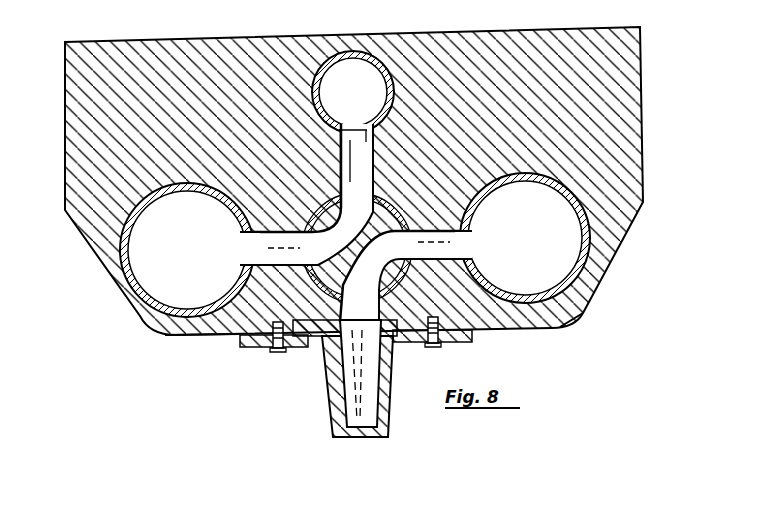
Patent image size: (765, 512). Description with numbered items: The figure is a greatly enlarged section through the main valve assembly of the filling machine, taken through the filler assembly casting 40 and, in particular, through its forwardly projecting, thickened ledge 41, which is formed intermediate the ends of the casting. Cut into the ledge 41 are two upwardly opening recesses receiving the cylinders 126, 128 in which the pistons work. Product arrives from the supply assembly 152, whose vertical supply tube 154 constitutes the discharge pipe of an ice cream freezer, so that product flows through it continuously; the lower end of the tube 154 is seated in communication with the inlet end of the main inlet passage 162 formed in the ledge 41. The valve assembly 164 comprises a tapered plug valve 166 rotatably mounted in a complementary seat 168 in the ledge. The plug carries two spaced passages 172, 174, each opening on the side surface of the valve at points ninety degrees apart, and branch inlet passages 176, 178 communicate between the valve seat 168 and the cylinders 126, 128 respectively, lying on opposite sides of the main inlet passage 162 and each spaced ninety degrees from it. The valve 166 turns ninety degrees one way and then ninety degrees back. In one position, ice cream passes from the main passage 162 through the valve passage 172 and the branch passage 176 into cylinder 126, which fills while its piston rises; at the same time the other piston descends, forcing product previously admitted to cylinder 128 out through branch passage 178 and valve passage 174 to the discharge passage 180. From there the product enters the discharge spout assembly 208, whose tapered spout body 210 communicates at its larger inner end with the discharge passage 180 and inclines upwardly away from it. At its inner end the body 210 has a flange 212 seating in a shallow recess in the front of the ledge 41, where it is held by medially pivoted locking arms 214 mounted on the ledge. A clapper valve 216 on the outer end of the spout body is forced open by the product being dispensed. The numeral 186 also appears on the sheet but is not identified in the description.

The cylinder 126 is at (152, 333).
The cylinder 128 is at (597, 283).
The filler assembly casting 40 is at (578, 318).
The ledge 41 is at (193, 335).
The product supply assembly 152 is at (394, 52).
The vertical supply tube 154 is at (327, 51).
The main inlet passage 162 is at (368, 130).
The valve assembly 164 is at (301, 349).
The tapered plug valve 166 is at (464, 259).
The valve seat 168 is at (262, 278).
The valve passage 172 is at (332, 211).
The valve passage 174 is at (405, 276).
The branch inlet passage 176 is at (253, 251).
The branch inlet passage 178 is at (464, 231).
The discharge passage 180 is at (372, 324).
The sheet numeral 186 is at (652, 491).
The discharge spout assembly 208 is at (320, 418).
The tapered spout body 210 is at (388, 418).
The flange 212 is at (401, 342).
The locking arms 214 is at (250, 348).
The clapper valve 216 is at (360, 440).